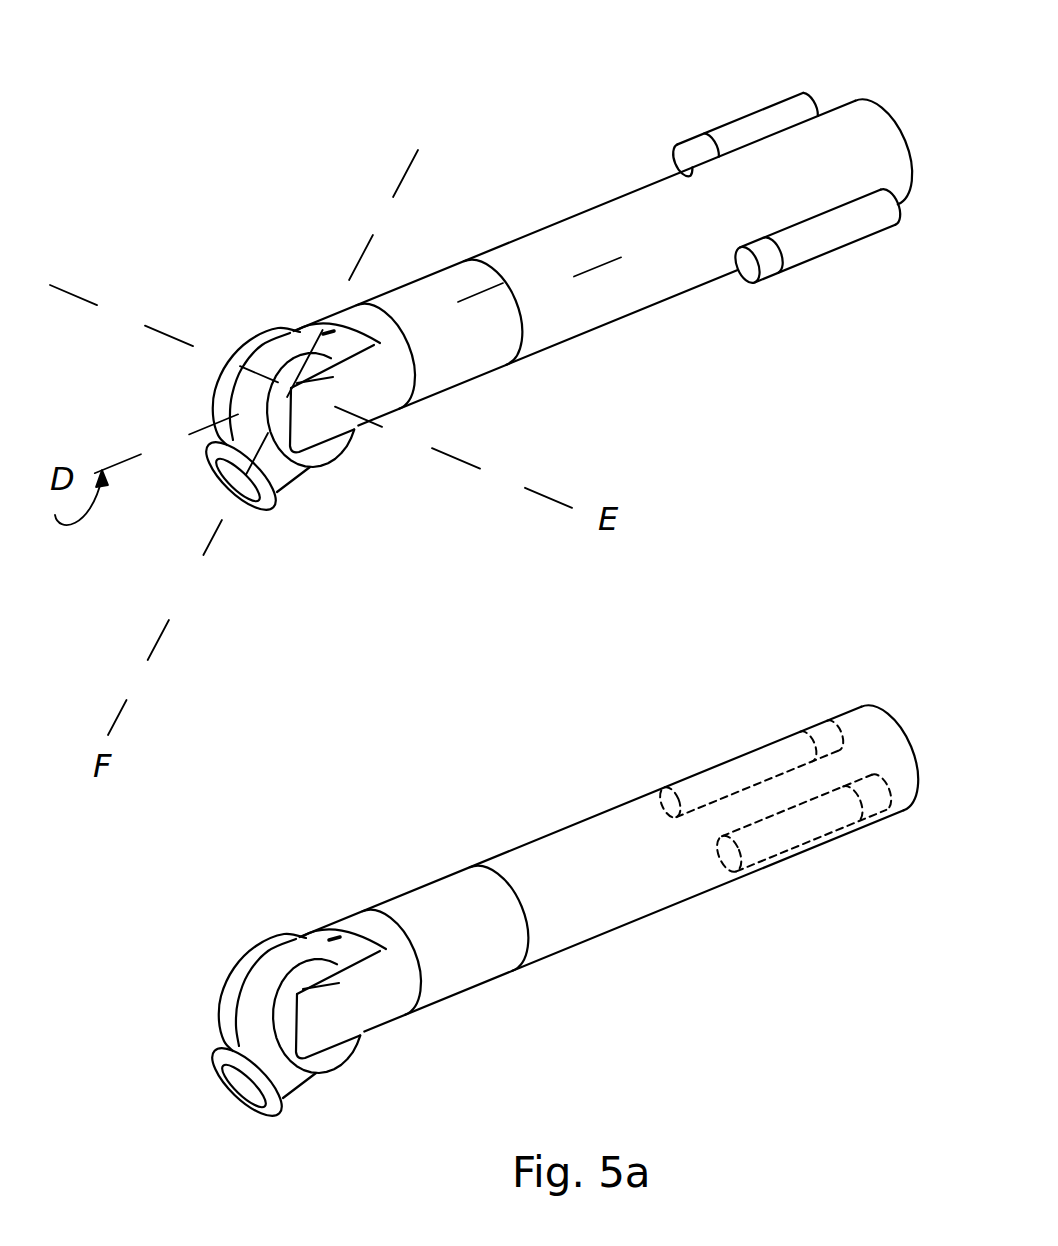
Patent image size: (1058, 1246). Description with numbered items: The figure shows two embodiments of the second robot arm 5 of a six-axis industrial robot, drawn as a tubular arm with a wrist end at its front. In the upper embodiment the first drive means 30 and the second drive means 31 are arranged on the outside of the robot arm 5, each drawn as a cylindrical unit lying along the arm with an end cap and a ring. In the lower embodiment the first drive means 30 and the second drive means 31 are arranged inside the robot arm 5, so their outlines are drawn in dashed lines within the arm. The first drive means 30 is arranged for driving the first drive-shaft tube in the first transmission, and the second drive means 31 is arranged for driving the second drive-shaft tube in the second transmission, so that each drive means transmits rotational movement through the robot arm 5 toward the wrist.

The second robot arm 5 is at (890, 780).
The first drive means 30 is at (760, 132).
The second drive means 31 is at (830, 235).